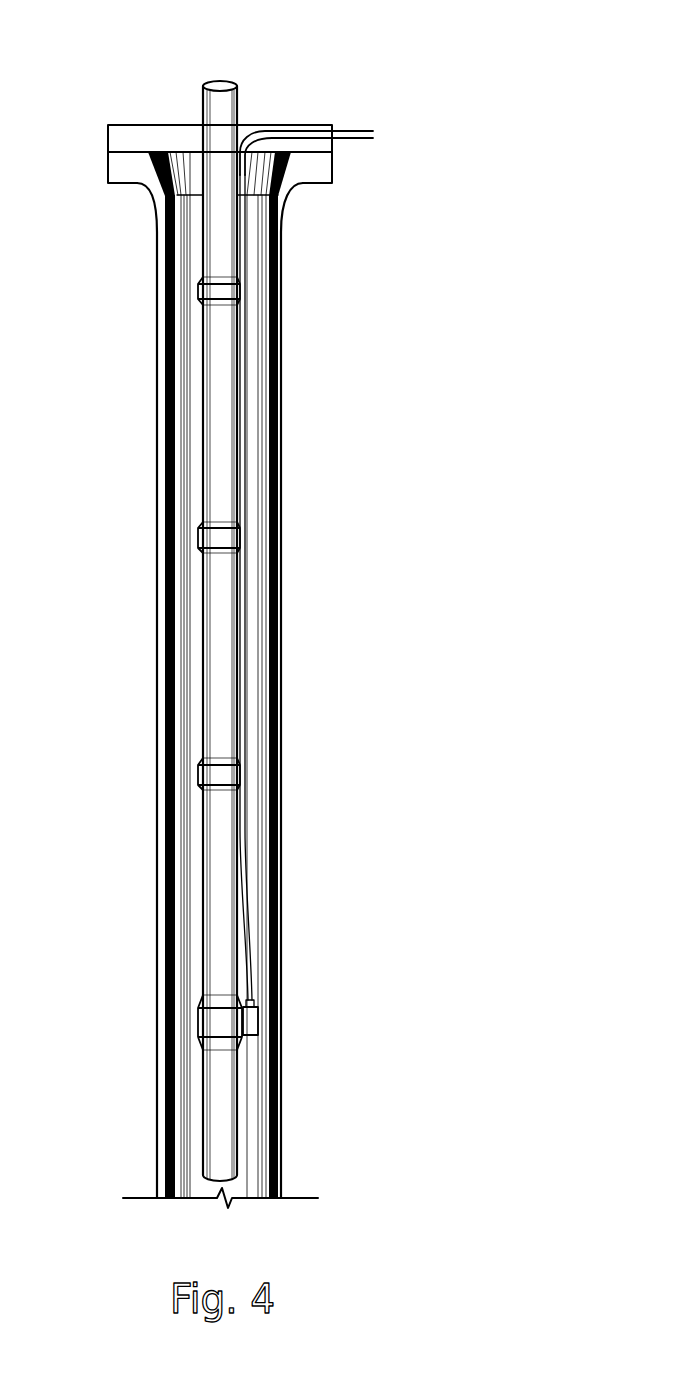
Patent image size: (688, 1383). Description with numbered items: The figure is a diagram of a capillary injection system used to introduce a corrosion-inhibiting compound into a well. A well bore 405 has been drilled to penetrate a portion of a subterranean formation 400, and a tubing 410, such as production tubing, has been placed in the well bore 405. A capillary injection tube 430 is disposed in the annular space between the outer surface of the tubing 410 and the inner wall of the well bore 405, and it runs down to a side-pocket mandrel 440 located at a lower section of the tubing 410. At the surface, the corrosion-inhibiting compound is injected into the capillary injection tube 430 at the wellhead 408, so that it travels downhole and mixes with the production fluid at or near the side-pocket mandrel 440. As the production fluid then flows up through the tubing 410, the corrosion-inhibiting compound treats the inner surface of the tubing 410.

The subterranean formation 400 is at (455, 51).
The well bore 405 is at (157, 365).
The wellhead 408 is at (202, 125).
The tubing 410 is at (223, 603).
The capillary injection tube 430 is at (243, 222).
The side-pocket mandrel 440 is at (256, 1021).